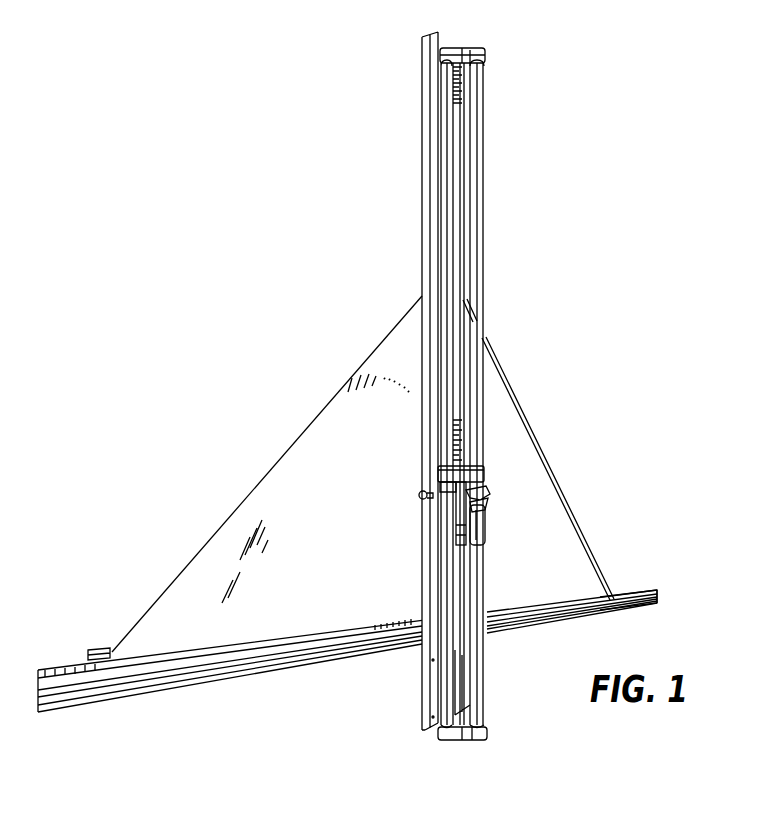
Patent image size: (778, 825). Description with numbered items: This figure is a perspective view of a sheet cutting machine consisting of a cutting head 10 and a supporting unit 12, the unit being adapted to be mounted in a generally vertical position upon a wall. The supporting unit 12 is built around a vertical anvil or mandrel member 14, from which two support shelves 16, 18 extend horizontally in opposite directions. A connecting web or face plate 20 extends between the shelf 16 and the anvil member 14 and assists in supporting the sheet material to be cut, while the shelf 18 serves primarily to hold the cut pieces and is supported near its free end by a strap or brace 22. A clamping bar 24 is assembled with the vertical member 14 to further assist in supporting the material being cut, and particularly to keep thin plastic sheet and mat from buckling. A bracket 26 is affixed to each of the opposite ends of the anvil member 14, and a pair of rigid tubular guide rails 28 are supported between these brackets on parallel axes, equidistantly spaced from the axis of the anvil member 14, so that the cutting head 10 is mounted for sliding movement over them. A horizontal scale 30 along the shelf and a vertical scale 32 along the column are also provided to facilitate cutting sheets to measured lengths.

The cutting head 10 is at (442, 520).
The supporting unit 12 is at (502, 297).
The vertical anvil or mandrel member 14 is at (460, 668).
The support shelf 16 is at (260, 672).
The support shelf 18 is at (625, 593).
The connecting web or face plate 20 is at (241, 522).
The strap or brace 22 is at (535, 443).
The clamping bar 24 is at (425, 85).
The bracket 26 is at (484, 49).
The rigid tubular guide rails 28 is at (477, 127).
The horizontal scale 30 is at (63, 660).
The vertical scale 32 is at (462, 432).